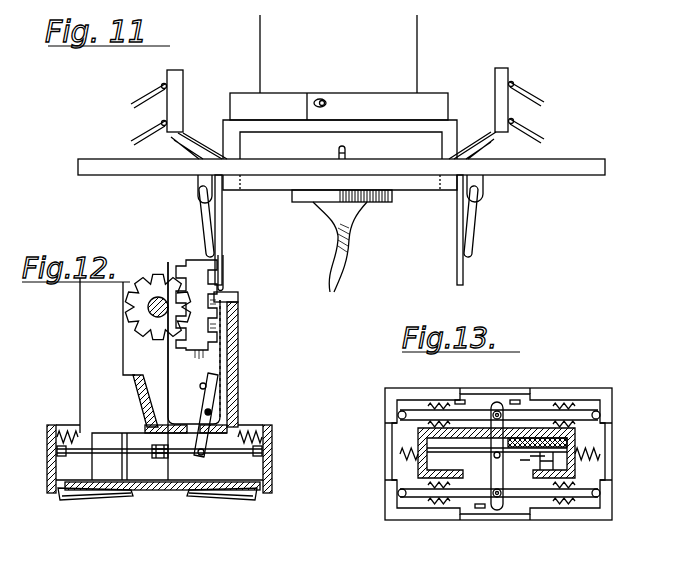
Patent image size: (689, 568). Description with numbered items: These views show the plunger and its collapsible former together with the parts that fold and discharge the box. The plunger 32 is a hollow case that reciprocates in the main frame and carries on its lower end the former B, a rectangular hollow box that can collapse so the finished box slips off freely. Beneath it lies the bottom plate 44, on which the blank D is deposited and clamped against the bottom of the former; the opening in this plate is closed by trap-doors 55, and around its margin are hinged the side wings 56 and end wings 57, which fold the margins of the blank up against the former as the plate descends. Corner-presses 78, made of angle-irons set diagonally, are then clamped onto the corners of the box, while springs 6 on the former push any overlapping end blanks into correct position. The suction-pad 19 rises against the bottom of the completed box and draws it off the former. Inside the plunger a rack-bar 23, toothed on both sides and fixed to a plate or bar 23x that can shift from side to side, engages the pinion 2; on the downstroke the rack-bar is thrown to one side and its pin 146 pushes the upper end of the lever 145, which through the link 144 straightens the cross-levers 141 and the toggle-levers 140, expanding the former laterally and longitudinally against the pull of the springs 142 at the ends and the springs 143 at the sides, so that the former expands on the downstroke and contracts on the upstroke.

In FIG. 11, the plunger 32 is at (338, 54).
In FIG. 12, the plunger 32 is at (92, 340).
In FIG. 11, the former B is at (342, 98).
In FIG. 11, the blank D is at (421, 184).
In FIG. 11, the bottom plate 44 is at (583, 171).
In FIG. 11, the suction-pad 19 is at (372, 202).
In FIG. 11, the trap-doors 55 is at (464, 268).
In FIG. 11, the side wings 56 is at (224, 222).
In FIG. 11, the corner-press 78 is at (172, 84).
In FIG. 11, the end wings 57 is at (187, 138).
In FIG. 12, the pinion 2 is at (150, 327).
In FIG. 12, the rack-bar 23 is at (205, 333).
In FIG. 12, the plate or bar 23x is at (202, 316).
In FIG. 12, the pin 146 is at (207, 386).
In FIG. 12, the lever 145 is at (216, 400).
In FIG. 12, the toggle-levers 140 is at (150, 453).
In FIG. 13, the toggle-levers 140 is at (529, 412).
In FIG. 12, the springs 6 is at (72, 497).
In FIG. 13, the cross-levers 141 is at (496, 405).
In FIG. 13, the springs 142 is at (400, 457).
In FIG. 13, the springs 143 is at (437, 401).
In FIG. 13, the link 144 is at (518, 455).